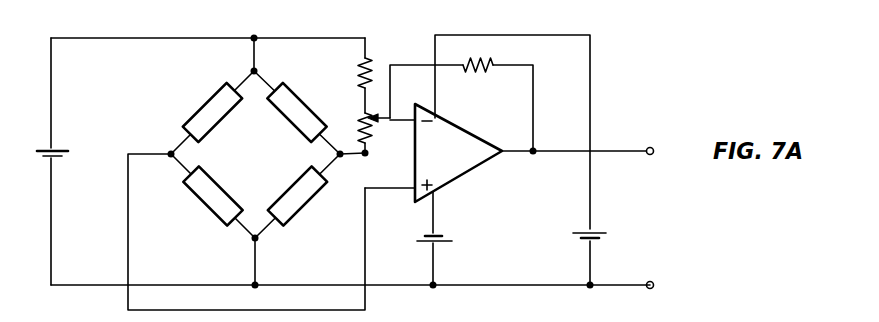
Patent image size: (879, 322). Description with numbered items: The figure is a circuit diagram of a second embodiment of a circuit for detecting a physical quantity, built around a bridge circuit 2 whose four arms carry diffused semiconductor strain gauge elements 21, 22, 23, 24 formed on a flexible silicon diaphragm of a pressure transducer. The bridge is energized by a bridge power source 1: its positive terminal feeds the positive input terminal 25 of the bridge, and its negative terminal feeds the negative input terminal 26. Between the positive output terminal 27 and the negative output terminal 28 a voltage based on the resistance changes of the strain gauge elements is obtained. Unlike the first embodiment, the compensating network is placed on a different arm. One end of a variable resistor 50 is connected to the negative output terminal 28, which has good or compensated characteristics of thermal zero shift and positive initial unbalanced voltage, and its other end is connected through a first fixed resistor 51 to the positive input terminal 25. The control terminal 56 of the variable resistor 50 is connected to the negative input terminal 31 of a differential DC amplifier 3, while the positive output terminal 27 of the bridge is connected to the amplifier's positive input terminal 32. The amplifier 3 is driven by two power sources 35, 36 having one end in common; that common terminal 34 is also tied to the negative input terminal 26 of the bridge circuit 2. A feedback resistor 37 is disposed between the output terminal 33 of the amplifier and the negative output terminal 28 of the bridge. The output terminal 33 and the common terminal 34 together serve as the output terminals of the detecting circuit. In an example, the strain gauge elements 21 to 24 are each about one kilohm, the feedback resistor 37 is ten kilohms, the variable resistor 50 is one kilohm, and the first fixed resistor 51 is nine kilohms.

The bridge power source 1 is at (44, 149).
The bridge circuit 2 is at (249, 159).
The diffused semiconductor strain gauge element 21 is at (208, 110).
The diffused semiconductor strain gauge element 22 is at (194, 200).
The diffused semiconductor strain gauge element 23 is at (306, 200).
The diffused semiconductor strain gauge element 24 is at (306, 112).
The positive input terminal 25 is at (257, 72).
The negative input terminal 26 is at (260, 240).
The positive output terminal 27 is at (170, 151).
The negative output terminal 28 is at (338, 158).
The differential DC amplifier 3 is at (457, 165).
The negative input terminal 31 is at (410, 122).
The positive input terminal 32 is at (405, 192).
The output terminal 33 is at (664, 144).
The common terminal 34 is at (655, 285).
The power source 35 is at (441, 234).
The power source 36 is at (598, 234).
The feedback resistor 37 is at (480, 72).
The variable resistor 50 is at (360, 135).
The first fixed resistor 51 is at (370, 60).
The control terminal 56 is at (385, 114).